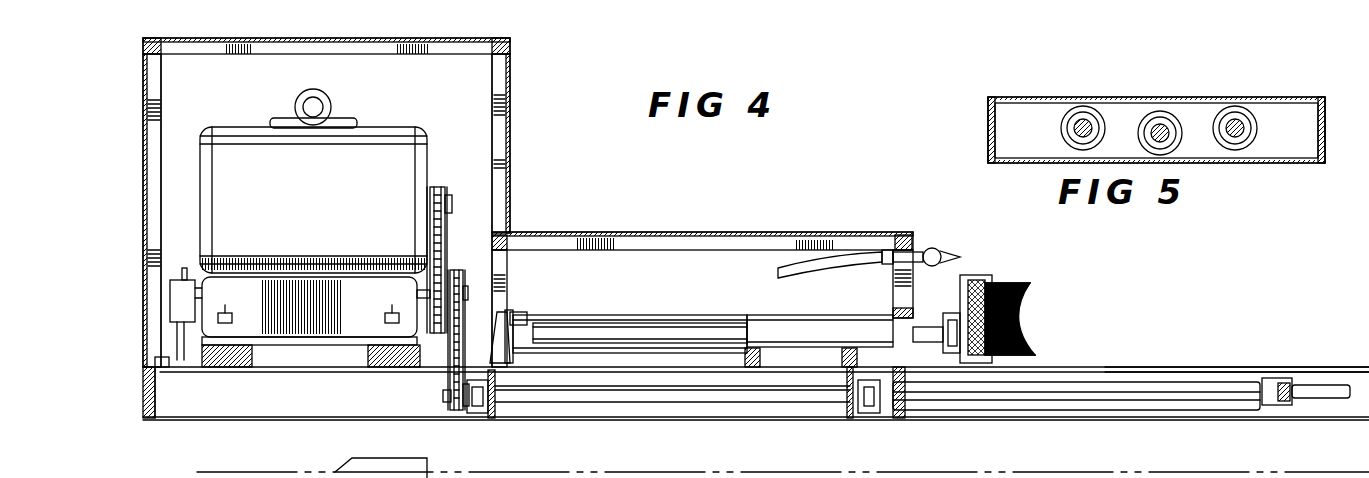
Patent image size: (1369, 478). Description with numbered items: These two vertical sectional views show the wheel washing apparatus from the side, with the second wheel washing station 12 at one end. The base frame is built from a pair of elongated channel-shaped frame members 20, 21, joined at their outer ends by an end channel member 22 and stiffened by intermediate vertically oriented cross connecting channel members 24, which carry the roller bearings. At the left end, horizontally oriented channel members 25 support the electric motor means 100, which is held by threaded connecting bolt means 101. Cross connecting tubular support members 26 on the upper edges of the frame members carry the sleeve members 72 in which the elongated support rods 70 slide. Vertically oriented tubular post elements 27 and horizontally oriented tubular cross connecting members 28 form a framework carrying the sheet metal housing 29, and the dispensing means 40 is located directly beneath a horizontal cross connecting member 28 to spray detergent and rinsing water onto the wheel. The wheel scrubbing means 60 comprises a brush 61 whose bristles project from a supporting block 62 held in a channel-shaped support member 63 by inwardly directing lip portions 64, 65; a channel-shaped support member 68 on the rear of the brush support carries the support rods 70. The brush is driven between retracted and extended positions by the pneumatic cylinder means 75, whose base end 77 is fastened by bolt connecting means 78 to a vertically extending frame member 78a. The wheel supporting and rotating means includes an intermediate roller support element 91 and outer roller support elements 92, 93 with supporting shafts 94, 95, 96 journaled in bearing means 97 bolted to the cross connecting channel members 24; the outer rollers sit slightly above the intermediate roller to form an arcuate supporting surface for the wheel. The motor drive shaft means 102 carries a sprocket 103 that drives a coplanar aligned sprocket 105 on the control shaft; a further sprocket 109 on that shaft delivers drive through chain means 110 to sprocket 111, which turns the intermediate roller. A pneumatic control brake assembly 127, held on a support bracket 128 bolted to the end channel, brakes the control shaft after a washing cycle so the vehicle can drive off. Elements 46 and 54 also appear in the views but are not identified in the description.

In FIG. 4, the second wheel washing station 12 is at (640, 400).
In FIG. 4, the elongated channel-shaped frame member 20 is at (1330, 368).
In FIG. 5, the elongated channel-shaped frame member 20 is at (1328, 143).
In FIG. 5, the elongated channel-shaped frame member 21 is at (988, 130).
In FIG. 4, the end channel member 22 is at (154, 412).
In FIG. 4, the intermediate cross connecting channel member 24 is at (500, 412).
In FIG. 5, the intermediate cross connecting channel member 24 is at (1280, 150).
In FIG. 4, the horizontally oriented channel member 25 is at (252, 362).
In FIG. 4, the cross connecting tubular support member 26 is at (742, 360).
In FIG. 4, the vertically oriented tubular post element 27 is at (160, 100).
In FIG. 4, the horizontally oriented tubular cross connecting member 28 is at (152, 42).
In FIG. 4, the sheet metal housing 29 is at (512, 162).
In FIG. 4, the dispensing means 40 is at (953, 247).
In FIG. 4, the conveyor element 46 is at (322, 474).
In FIG. 4, the cam block 54 is at (385, 476).
In FIG. 4, the vehicle wheel scrubbing means 60 is at (1027, 326).
In FIG. 4, the brush 61 is at (1020, 300).
In FIG. 4, the supporting block 62 is at (1000, 356).
In FIG. 4, the channel-shaped support member 63 is at (975, 278).
In FIG. 4, the inwardly directing lip portion 64 is at (992, 286).
In FIG. 4, the inwardly directing lip portion 65 is at (990, 357).
In FIG. 4, the channel-shaped support member 68 is at (950, 318).
In FIG. 4, the elongated support rod 70 is at (688, 330).
In FIG. 4, the sleeve member 72 is at (808, 326).
In FIG. 4, the pneumatic cylinder means 75 is at (590, 316).
In FIG. 4, the base end 77 is at (528, 316).
In FIG. 4, the bolt connecting means 78 is at (515, 312).
In FIG. 4, the vertically extending frame member 78a is at (527, 362).
In FIG. 4, the intermediate roller support element 91 is at (1154, 385).
In FIG. 5, the intermediate roller support element 91 is at (1163, 128).
In FIG. 4, the outer roller support element 92 is at (1272, 378).
In FIG. 5, the outer roller support element 92 is at (1248, 110).
In FIG. 5, the outer roller support element 93 is at (1092, 110).
In FIG. 5, the supporting shaft 94 is at (1160, 115).
In FIG. 4, the supporting shaft 95 is at (1330, 392).
In FIG. 5, the supporting shaft 95 is at (1245, 128).
In FIG. 5, the supporting shaft 96 is at (1074, 128).
In FIG. 4, the bearing means 97 is at (478, 405).
In FIG. 4, the electric motor means 100 is at (330, 189).
In FIG. 4, the threaded connecting bolt means 101 is at (225, 314).
In FIG. 4, the drive shaft means 102 is at (433, 190).
In FIG. 4, the sprocket 103 is at (448, 192).
In FIG. 4, the sprocket 105 is at (440, 268).
In FIG. 4, the sprocket 109 is at (456, 274).
In FIG. 4, the chain means 110 is at (446, 350).
In FIG. 4, the sprocket 111 is at (445, 402).
In FIG. 4, the pneumatic control brake assembly 127 is at (190, 279).
In FIG. 4, the support bracket 128 is at (185, 352).